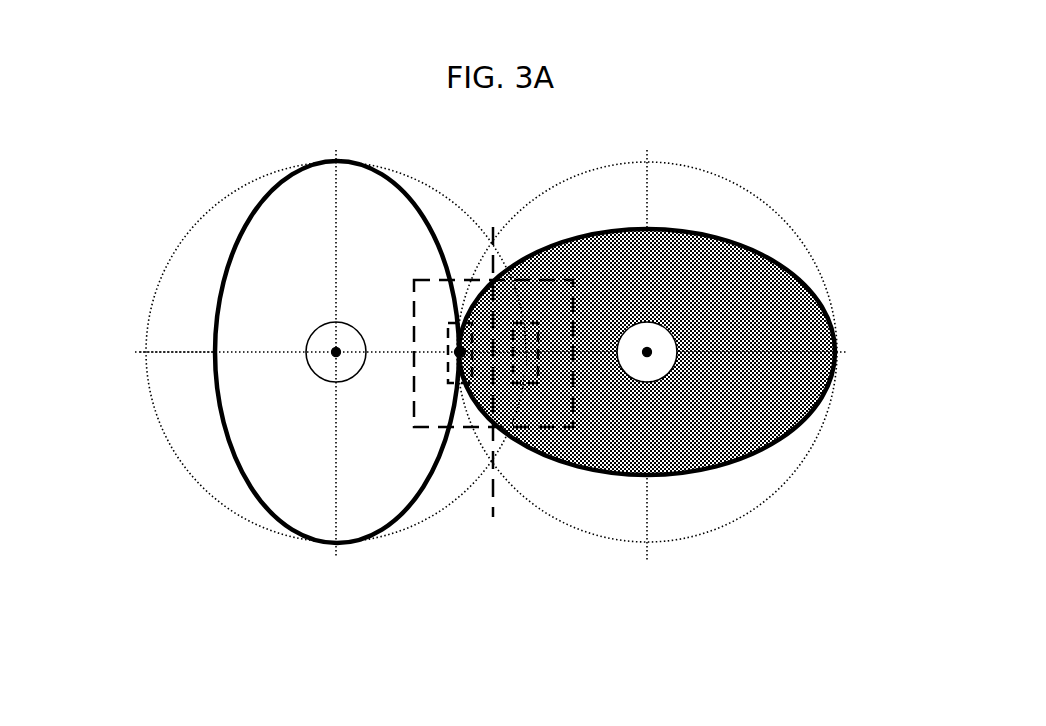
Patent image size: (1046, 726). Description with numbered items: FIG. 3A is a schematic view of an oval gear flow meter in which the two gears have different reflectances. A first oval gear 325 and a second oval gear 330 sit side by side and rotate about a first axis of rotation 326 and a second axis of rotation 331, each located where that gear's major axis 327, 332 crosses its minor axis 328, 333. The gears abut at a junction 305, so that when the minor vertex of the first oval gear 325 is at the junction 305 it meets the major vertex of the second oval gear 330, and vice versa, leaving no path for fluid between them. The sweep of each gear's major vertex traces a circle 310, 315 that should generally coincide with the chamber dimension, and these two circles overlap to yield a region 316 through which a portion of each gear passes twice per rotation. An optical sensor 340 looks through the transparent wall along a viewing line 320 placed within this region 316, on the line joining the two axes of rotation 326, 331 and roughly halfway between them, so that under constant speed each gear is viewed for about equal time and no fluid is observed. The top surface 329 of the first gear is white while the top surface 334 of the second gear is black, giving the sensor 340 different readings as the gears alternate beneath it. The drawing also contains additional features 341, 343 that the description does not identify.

The junction 305 is at (460, 352).
The circle of rotation of first gear major vertex 310 is at (165, 280).
The circle of rotation of second gear major vertex 315 is at (805, 462).
The overlap region 316 is at (483, 257).
The viewing line 320 is at (497, 237).
The first oval gear 325 is at (232, 450).
The axis of rotation of first gear 326 is at (336, 352).
The major axis of first gear 327 is at (338, 510).
The minor axis of first gear 328 is at (168, 353).
The top surface of first oval gear 329 is at (282, 480).
The second oval gear 330 is at (786, 267).
The axis of rotation of second gear 331 is at (648, 352).
The major axis of second gear 332 is at (820, 355).
The minor axis of second gear 333 is at (652, 532).
The top surface of second oval gear 334 is at (798, 320).
The optical sensor 340 is at (543, 432).
The left small dashed window 341 is at (452, 338).
The right small dashed window 343 is at (533, 337).